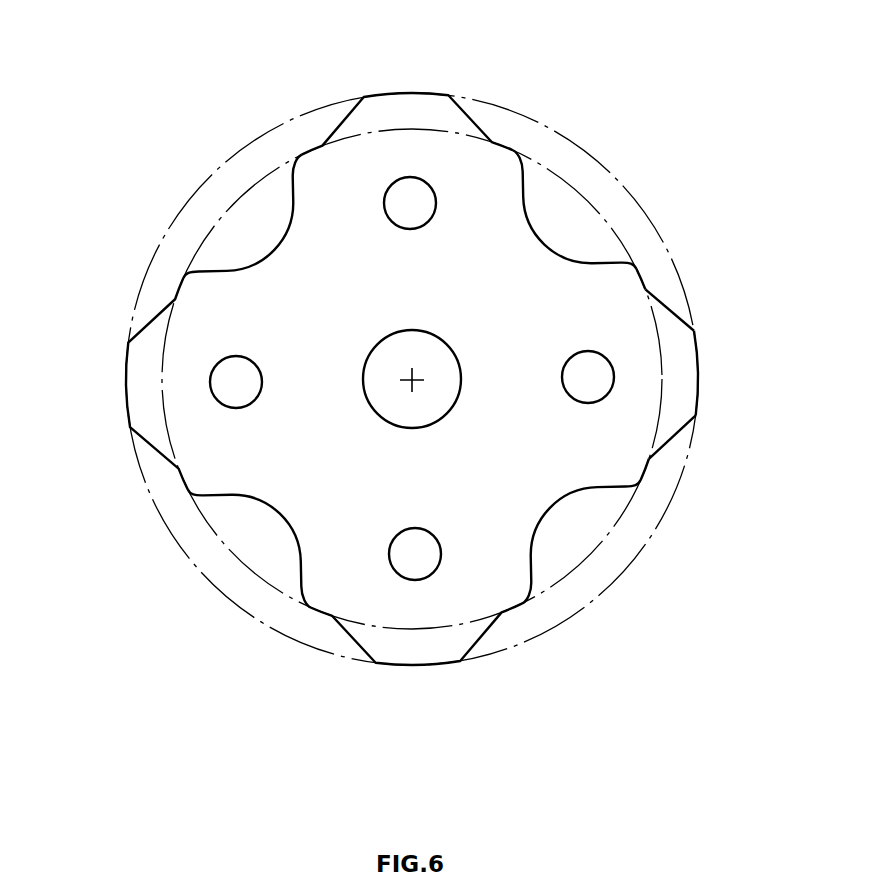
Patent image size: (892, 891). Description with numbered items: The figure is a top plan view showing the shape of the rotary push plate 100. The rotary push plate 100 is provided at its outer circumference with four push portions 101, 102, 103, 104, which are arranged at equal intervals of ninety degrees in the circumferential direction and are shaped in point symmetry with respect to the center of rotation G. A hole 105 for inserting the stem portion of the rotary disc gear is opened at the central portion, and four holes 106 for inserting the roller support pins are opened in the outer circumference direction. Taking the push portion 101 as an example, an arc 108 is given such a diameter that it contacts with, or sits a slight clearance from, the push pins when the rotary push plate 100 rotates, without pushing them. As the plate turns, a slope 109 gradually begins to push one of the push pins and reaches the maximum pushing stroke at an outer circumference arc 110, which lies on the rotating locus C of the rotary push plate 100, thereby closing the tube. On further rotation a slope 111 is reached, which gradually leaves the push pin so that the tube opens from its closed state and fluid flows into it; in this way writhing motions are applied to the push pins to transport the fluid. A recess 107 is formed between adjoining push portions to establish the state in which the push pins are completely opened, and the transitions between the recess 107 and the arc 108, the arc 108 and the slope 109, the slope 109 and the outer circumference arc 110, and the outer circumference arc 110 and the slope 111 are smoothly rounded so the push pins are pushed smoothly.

The rotary push plate 100 is at (598, 72).
The push portion 101 is at (677, 367).
The push portion 102 is at (402, 113).
The push portion 103 is at (147, 398).
The push portion 104 is at (420, 646).
The hole 105 is at (410, 330).
The holes 106 is at (588, 351).
The recess 107 is at (549, 249).
The arc 108 is at (641, 279).
The slope 109 is at (670, 313).
The outer circumference arc 110 is at (698, 377).
The slope 111 is at (670, 443).
The rotating locus C is at (650, 545).
The center of rotation G is at (414, 379).